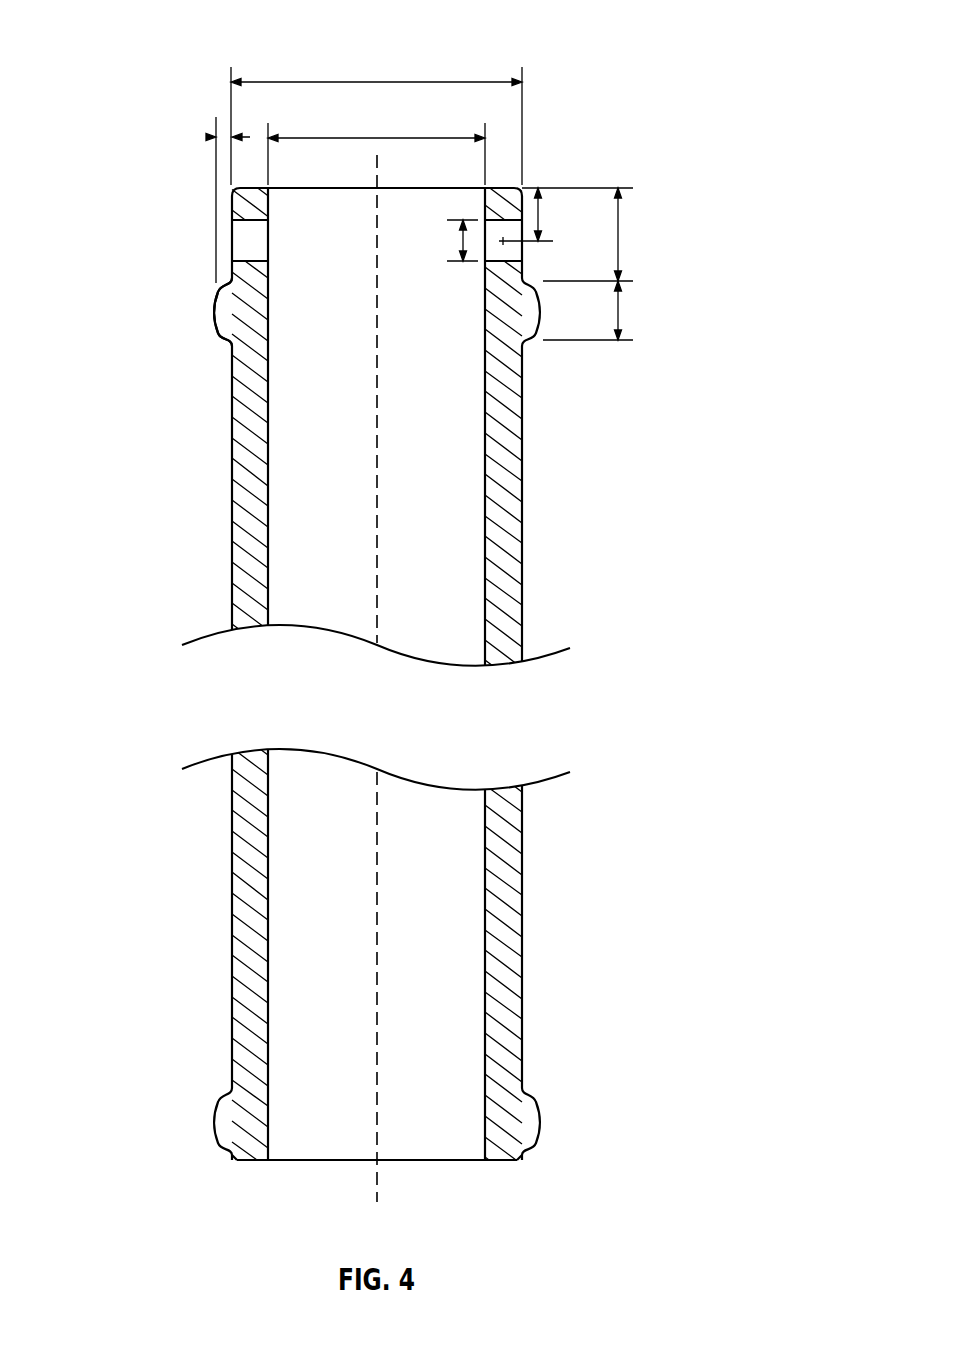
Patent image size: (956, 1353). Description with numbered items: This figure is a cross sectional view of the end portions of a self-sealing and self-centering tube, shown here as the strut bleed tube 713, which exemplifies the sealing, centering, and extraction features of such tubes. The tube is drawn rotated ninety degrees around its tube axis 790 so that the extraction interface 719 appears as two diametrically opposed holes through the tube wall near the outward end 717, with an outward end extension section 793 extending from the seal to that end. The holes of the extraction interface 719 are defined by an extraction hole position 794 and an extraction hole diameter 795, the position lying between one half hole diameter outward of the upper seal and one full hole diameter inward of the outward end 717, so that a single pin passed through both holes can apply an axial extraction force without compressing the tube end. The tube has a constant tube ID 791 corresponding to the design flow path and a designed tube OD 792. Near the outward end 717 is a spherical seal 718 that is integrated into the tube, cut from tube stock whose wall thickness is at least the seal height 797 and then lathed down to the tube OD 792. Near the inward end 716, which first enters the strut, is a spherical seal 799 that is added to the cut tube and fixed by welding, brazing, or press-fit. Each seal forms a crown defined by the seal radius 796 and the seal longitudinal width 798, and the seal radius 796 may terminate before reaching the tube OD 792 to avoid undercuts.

The strut bleed tube 713 is at (132, 30).
The inward end 716 is at (500, 1160).
The outward end 717 is at (502, 188).
The spherical seal 718 is at (218, 310).
The extraction interface 719 is at (248, 240).
The tube axis 790 is at (376, 1183).
The tube ID 791 is at (378, 138).
The tube OD 792 is at (378, 82).
The outward end extension section 793 is at (620, 215).
The extraction hole position 794 is at (540, 208).
The extraction hole diameter 795 is at (462, 240).
The seal radius 796 is at (205, 328).
The seal height 797 is at (207, 136).
The seal longitudinal width 798 is at (620, 310).
The spherical seal 799 is at (217, 1120).